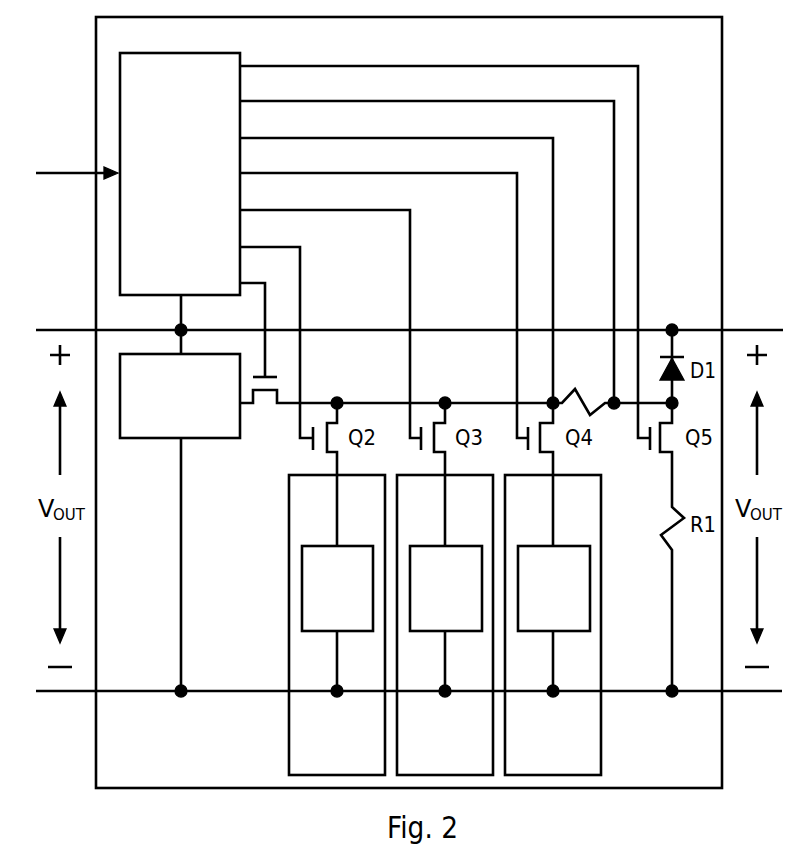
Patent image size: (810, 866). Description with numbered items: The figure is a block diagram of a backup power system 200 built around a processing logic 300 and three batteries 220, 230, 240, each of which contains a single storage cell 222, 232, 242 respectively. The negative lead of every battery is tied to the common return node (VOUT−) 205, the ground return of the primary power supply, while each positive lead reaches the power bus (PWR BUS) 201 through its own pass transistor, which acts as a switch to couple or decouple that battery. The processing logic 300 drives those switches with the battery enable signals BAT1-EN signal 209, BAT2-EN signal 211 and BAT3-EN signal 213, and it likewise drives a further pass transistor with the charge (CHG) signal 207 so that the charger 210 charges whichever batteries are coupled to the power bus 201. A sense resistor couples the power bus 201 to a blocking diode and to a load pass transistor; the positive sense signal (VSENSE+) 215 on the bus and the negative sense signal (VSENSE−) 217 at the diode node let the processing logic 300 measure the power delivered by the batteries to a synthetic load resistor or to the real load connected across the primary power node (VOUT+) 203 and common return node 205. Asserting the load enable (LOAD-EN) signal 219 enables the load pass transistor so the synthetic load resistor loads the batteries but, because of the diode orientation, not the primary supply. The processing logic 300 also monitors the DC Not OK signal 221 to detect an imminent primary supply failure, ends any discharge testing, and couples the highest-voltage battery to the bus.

The backup power system 200 is at (708, 85).
The processing logic 300 is at (163, 150).
The charger 210 is at (168, 423).
The DC Not OK signal 221 is at (82, 181).
The load enable (LOAD-EN) signal 219 is at (540, 67).
The negative sense signal (VSENSE−) 217 is at (505, 102).
The positive sense signal (VSENSE+) 215 is at (470, 139).
The BAT3-EN signal 213 is at (433, 174).
The BAT2-EN signal 211 is at (411, 270).
The BAT1-EN signal 209 is at (302, 304).
The charge (CHG) signal 207 is at (265, 294).
The primary power node (VOUT+) 203 is at (422, 329).
The power bus (PWR BUS) 201 is at (420, 400).
The common return node (VOUT−) 205 is at (230, 694).
The battery 220 is at (339, 757).
The cell 222 is at (350, 613).
The battery 230 is at (447, 757).
The cell 232 is at (458, 613).
The battery 240 is at (555, 757).
The cell 242 is at (566, 613).